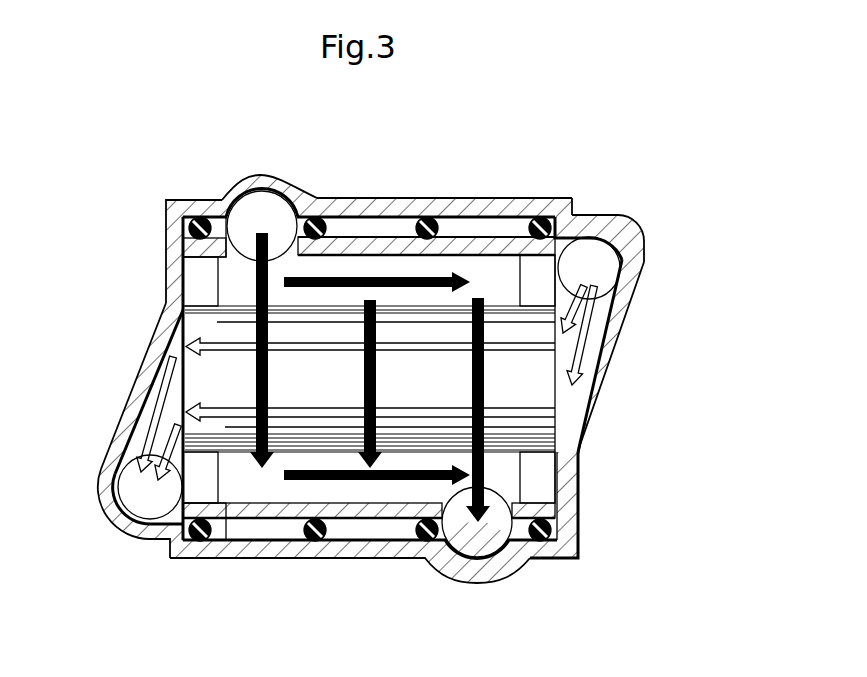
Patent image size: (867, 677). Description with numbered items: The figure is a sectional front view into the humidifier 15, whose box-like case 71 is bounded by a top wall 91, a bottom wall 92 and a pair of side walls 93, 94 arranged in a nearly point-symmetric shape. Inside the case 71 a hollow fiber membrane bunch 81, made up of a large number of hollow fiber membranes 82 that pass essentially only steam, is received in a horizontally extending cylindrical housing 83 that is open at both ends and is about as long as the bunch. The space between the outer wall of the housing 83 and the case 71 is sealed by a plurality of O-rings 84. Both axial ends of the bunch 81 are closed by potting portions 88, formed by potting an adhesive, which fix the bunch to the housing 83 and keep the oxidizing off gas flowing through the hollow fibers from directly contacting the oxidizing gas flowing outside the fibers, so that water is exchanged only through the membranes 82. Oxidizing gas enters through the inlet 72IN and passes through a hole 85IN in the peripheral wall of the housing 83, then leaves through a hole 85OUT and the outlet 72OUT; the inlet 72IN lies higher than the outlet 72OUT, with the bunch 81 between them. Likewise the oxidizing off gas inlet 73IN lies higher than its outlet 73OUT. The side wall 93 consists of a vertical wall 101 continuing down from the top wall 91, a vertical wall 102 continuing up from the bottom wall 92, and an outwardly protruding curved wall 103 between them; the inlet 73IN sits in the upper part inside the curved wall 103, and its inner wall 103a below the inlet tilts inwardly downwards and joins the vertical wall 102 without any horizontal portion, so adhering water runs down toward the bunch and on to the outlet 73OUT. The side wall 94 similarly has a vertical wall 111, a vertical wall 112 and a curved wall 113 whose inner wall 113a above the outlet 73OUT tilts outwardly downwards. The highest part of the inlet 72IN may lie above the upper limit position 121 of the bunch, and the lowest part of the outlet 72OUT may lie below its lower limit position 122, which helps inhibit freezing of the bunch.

The humidifier 15 is at (578, 162).
The case 71 is at (470, 196).
The inlet 72IN is at (277, 212).
The outlet 72OUT is at (482, 547).
The inlet 73IN is at (605, 270).
The outlet 73OUT is at (150, 490).
The hollow fiber membrane bunch 81 is at (287, 457).
The hollow fiber membrane 82 is at (200, 377).
The housing 83 is at (385, 244).
The O-ring 84 is at (201, 222).
The hole 85IN is at (298, 286).
The hole 85OUT is at (443, 472).
The potting portion 88 is at (197, 272).
The top wall 91 is at (500, 212).
The bottom wall 92 is at (345, 558).
The side wall 93 is at (628, 352).
The side wall 94 is at (160, 286).
The vertical wall 101 is at (580, 212).
The vertical wall 102 is at (578, 507).
The curved wall 103 is at (620, 320).
The inner wall 103a is at (592, 343).
The vertical wall 111 is at (248, 284).
The vertical wall 112 is at (170, 543).
The curved wall 113 is at (137, 382).
The inner wall 113a is at (135, 440).
The upper limit position 121 is at (195, 255).
The lower limit position 122 is at (236, 452).